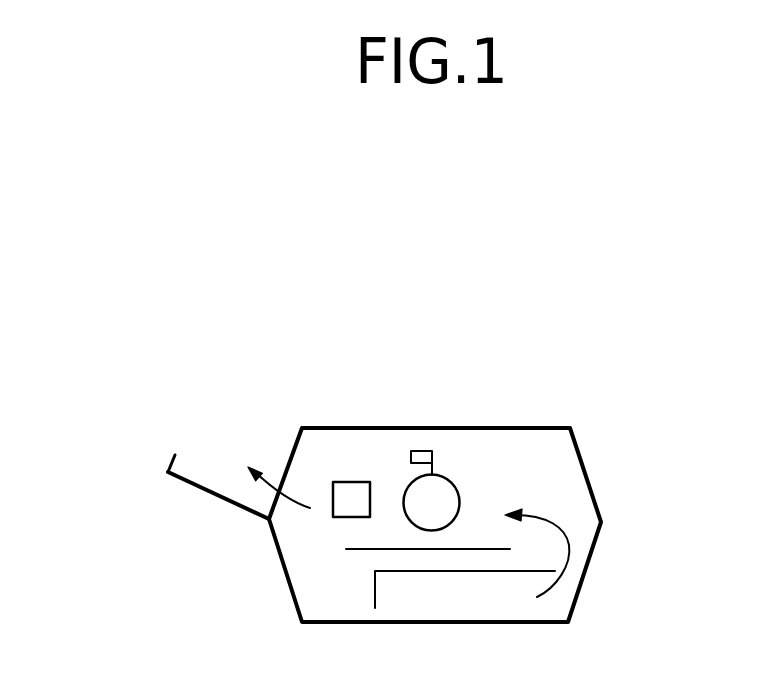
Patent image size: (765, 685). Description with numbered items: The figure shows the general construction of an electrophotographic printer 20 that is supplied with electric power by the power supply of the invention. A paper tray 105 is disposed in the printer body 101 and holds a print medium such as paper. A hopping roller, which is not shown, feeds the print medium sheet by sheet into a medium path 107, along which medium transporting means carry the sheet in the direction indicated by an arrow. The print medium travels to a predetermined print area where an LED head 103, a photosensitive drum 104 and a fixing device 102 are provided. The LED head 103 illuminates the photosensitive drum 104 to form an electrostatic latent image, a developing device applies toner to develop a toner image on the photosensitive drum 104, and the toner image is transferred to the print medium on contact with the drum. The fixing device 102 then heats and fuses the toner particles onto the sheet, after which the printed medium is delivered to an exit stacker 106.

The electronic device 20 is at (607, 305).
The printer body 101 is at (578, 443).
The fixing device 102 is at (352, 482).
The LED head 103 is at (415, 451).
The photosensitive drum 104 is at (452, 480).
The paper tray 105 is at (548, 605).
The exit stacker 106 is at (197, 485).
The medium path 107 is at (568, 527).